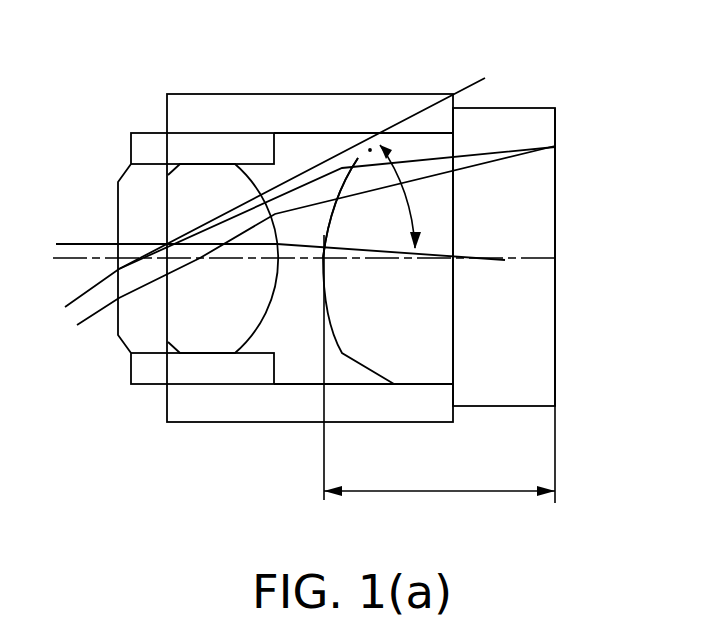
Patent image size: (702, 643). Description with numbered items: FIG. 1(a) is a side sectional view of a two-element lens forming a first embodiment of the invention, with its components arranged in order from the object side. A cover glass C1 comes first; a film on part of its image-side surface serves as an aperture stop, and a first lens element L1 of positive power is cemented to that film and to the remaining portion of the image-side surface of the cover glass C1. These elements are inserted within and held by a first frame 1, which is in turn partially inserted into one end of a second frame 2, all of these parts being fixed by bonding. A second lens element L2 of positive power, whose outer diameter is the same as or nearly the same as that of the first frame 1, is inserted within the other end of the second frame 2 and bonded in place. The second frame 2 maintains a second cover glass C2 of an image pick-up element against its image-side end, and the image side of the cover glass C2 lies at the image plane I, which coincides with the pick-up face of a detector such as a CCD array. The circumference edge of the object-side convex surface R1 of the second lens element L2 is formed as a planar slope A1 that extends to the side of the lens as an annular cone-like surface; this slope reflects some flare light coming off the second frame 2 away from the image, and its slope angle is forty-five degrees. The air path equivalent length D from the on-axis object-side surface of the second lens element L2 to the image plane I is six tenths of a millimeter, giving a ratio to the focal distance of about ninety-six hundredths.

The first frame 1 is at (147, 143).
The second frame 2 is at (237, 110).
The cover glass C1 is at (127, 347).
The first lens element L1 is at (212, 338).
The second lens element L2 is at (413, 368).
The radius of curvature of second lens surface R1 is at (330, 212).
The planar slope A1 is at (370, 150).
The second cover glass C2 is at (514, 382).
The image plane I is at (557, 337).
The air path equivalent length D is at (439, 381).